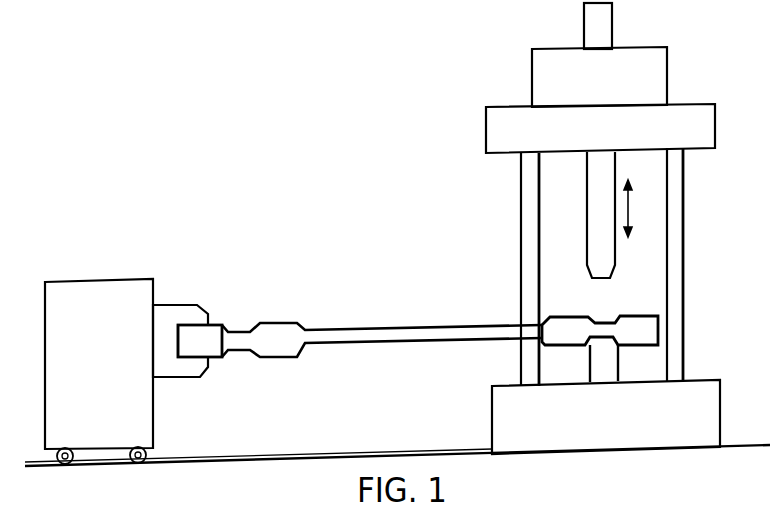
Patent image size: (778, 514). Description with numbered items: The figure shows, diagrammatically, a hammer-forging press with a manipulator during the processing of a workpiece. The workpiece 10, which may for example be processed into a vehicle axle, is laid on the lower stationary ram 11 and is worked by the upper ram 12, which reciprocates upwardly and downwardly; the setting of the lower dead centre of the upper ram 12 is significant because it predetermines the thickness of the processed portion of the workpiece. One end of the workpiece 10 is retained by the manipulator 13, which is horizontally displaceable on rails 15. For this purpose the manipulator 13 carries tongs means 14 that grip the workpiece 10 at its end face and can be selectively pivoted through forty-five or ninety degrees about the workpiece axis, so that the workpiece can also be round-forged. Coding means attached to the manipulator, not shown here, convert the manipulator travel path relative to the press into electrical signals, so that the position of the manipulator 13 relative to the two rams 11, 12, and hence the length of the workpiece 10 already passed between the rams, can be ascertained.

The workpiece 10 is at (644, 323).
The lower stationary ram 11 is at (600, 366).
The upper ram 12 is at (599, 183).
The manipulator 13 is at (124, 295).
The tongs means 14 is at (188, 310).
The rails 15 is at (226, 460).